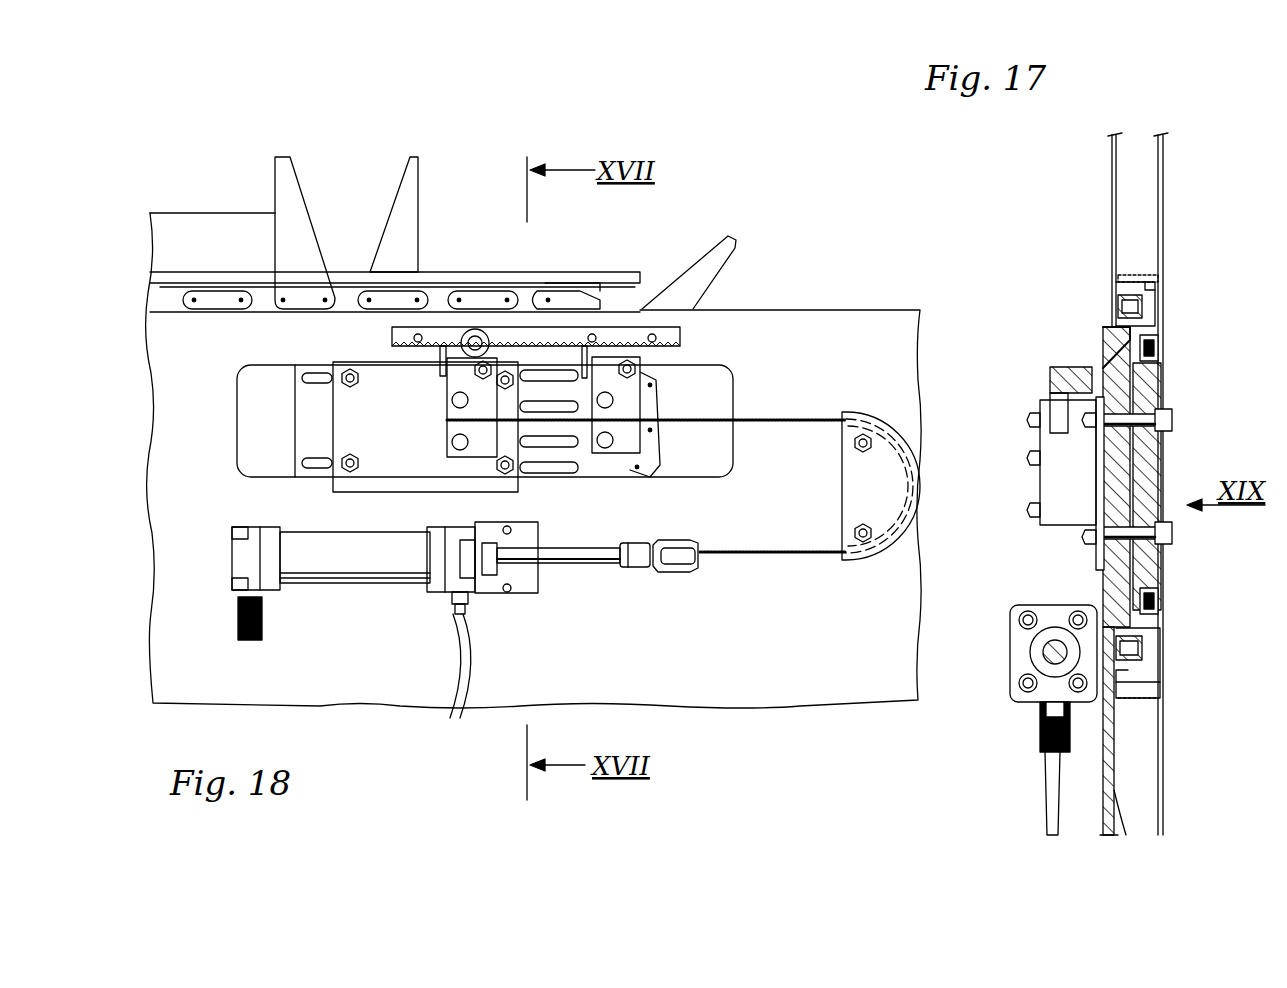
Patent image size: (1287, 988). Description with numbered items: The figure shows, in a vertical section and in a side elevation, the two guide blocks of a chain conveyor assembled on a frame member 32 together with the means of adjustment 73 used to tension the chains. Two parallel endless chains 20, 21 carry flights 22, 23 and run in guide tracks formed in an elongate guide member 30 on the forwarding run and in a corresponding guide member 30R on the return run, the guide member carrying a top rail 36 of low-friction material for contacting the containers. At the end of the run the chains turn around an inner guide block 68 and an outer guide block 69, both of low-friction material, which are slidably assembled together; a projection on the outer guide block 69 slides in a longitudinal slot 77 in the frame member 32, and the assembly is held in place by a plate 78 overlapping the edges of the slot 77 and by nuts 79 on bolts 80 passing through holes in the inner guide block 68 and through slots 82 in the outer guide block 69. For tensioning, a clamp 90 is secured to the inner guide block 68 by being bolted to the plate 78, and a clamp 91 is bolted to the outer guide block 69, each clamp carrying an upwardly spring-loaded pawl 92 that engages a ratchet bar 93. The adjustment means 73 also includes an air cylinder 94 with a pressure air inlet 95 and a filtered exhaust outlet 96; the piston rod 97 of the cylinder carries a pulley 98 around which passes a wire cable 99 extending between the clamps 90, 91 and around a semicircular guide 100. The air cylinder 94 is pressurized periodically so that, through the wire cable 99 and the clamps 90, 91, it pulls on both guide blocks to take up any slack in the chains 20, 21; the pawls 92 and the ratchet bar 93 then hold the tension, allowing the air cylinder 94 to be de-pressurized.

In FIG. 17, the endless chain 20 is at (1158, 345).
In FIG. 18, the endless chain 21 is at (568, 305).
In FIG. 17, the endless chain 21 is at (1122, 305).
In FIG. 18, the flight 22 is at (403, 203).
In FIG. 17, the flight 22 is at (1165, 179).
In FIG. 18, the flight 23 is at (288, 184).
In FIG. 17, the flight 23 is at (1112, 181).
In FIG. 17, the elongate guide member 30 is at (1150, 306).
In FIG. 17, the elongate guide member in the return run 30R is at (1150, 635).
In FIG. 18, the frame member 32 is at (866, 339).
In FIG. 17, the top rail 36 is at (1140, 275).
In FIG. 17, the inner guide block 68 is at (1150, 385).
In FIG. 18, the outer guide block 69 is at (577, 449).
In FIG. 17, the outer guide block 69 is at (1116, 340).
In FIG. 18, the means of adjustment 73 is at (715, 579).
In FIG. 17, the means of adjustment 73 is at (1033, 715).
In FIG. 18, the longitudinal slot 77 is at (252, 370).
In FIG. 17, the longitudinal slot 77 is at (1160, 542).
In FIG. 18, the plate 78 is at (420, 431).
In FIG. 17, the plate 78 is at (1096, 560).
In FIG. 18, the nuts 79 is at (355, 380).
In FIG. 17, the nuts 79 is at (1085, 425).
In FIG. 18, the bolts 80 is at (345, 382).
In FIG. 17, the bolts 80 is at (1130, 520).
In FIG. 18, the slots 82 is at (318, 381).
In FIG. 18, the clamp 90 is at (478, 445).
In FIG. 17, the clamp 90 is at (1048, 480).
In FIG. 18, the clamp 91 is at (620, 447).
In FIG. 18, the spring-loaded pawl 92 is at (440, 362).
In FIG. 17, the spring-loaded pawl 92 is at (1058, 410).
In FIG. 18, the ratchet bar 93 is at (680, 342).
In FIG. 17, the ratchet bar 93 is at (1058, 368).
In FIG. 18, the air cylinder 94 is at (368, 560).
In FIG. 17, the air cylinder 94 is at (1048, 615).
In FIG. 18, the pressure air inlet 95 is at (468, 655).
In FIG. 17, the pressure air inlet 95 is at (1045, 810).
In FIG. 18, the exhaust outlet 96 is at (238, 618).
In FIG. 18, the piston rod 97 is at (584, 556).
In FIG. 17, the piston rod 97 is at (1043, 652).
In FIG. 18, the pulley 98 is at (672, 572).
In FIG. 18, the wire cable 99 is at (782, 417).
In FIG. 17, the wire cable 99 is at (1050, 490).
In FIG. 18, the semicircular guide 100 is at (880, 510).